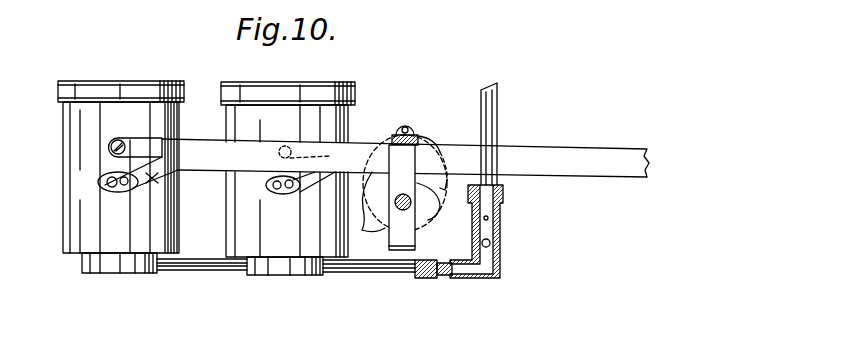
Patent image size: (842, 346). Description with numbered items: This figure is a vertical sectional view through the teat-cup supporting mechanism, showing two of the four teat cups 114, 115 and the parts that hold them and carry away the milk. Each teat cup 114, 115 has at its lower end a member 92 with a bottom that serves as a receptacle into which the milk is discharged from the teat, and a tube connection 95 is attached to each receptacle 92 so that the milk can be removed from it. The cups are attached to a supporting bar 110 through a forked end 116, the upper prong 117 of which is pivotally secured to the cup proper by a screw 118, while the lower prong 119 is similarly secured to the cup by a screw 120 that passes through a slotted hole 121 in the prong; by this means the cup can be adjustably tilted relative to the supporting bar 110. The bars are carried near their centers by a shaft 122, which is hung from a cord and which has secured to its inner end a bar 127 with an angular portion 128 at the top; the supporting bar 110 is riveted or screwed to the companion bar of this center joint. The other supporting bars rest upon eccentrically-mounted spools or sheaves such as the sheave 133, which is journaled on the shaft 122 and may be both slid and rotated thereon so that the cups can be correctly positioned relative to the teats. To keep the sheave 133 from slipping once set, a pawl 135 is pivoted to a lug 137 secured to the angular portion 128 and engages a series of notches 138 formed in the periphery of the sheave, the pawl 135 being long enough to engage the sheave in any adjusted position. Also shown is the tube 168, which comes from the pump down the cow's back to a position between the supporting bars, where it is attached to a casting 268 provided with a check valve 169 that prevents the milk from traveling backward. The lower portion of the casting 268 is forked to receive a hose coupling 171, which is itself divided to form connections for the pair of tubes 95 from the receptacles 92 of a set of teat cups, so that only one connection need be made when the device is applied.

The receptacle 92 is at (110, 267).
The tube connection 95 is at (195, 263).
The supporting bar 110 is at (610, 168).
The teat cup 114 is at (83, 120).
The teat cup 115 is at (308, 110).
The forked end 116 is at (163, 157).
The upper prong 117 is at (133, 147).
The screw 118 is at (112, 143).
The lower prong 119 is at (180, 188).
The screw 120 is at (105, 180).
The slotted hole 121 is at (128, 192).
The shaft 122 is at (405, 210).
The bar 127 is at (400, 228).
The angular portion 128 is at (393, 140).
The eccentrically-mounted sheave 133 is at (427, 212).
The pawl 135 is at (424, 135).
The lug 137 is at (403, 124).
The notches 138 is at (368, 208).
The tube 168 is at (487, 110).
The check valve 169 is at (493, 245).
The hose coupling 171 is at (430, 278).
The casting 268 is at (505, 215).